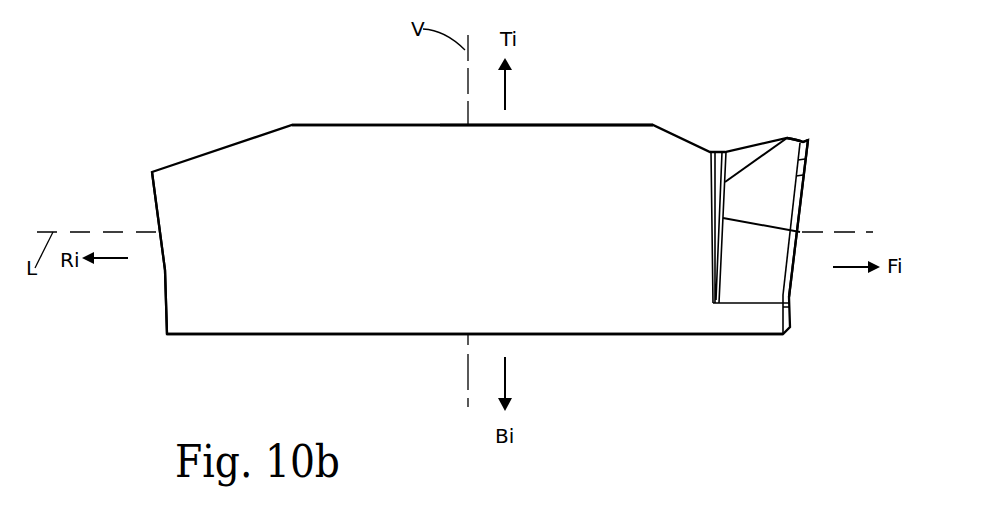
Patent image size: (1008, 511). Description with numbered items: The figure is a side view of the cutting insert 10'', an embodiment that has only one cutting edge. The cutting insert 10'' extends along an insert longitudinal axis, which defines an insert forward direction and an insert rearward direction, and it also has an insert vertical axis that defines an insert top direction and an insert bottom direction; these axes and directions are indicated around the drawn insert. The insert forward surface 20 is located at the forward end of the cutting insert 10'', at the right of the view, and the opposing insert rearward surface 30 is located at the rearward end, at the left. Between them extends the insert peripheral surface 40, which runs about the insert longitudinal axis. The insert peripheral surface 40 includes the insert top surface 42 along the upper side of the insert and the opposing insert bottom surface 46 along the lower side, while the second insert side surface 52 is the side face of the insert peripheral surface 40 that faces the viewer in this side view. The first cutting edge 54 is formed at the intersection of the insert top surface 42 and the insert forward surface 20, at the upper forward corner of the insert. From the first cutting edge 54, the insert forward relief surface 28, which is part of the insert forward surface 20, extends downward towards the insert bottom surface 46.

The cutting insert 10'' is at (469, 198).
The insert forward surface 20 is at (818, 202).
The insert forward relief surface 28 is at (807, 167).
The insert rearward surface 30 is at (94, 208).
The insert peripheral surface 40 is at (339, 108).
The insert top surface 42 is at (453, 100).
The insert bottom surface 46 is at (391, 359).
The second insert side surface 52 is at (248, 312).
The first cutting edge 54 is at (808, 142).